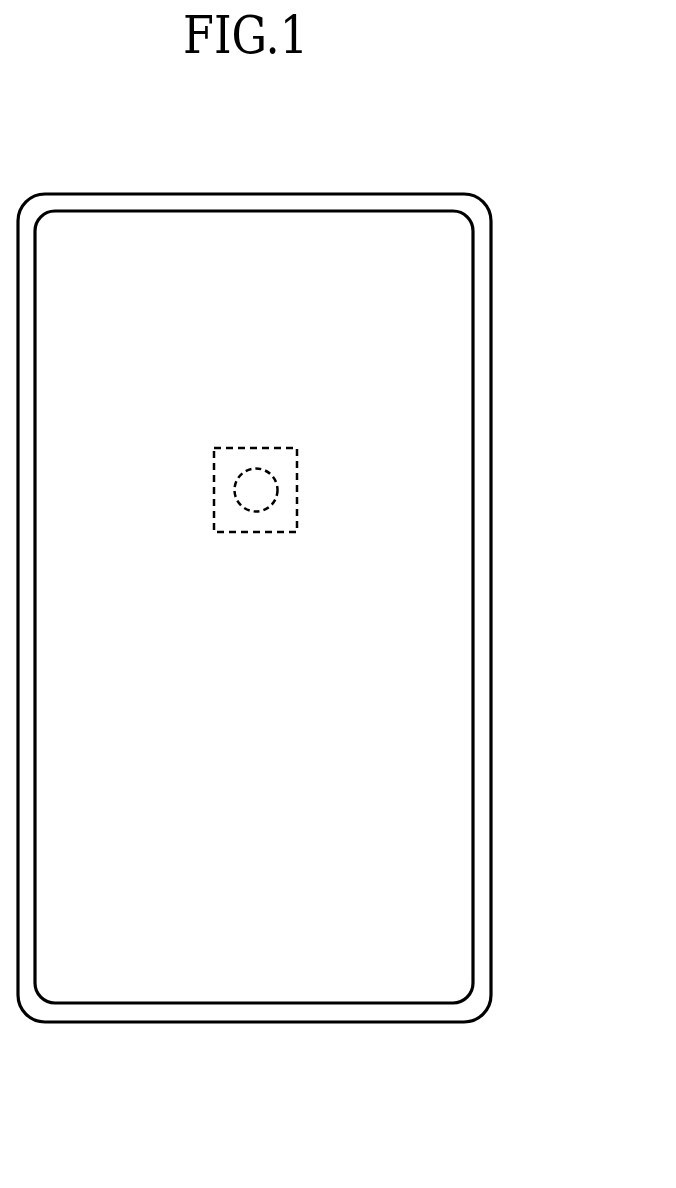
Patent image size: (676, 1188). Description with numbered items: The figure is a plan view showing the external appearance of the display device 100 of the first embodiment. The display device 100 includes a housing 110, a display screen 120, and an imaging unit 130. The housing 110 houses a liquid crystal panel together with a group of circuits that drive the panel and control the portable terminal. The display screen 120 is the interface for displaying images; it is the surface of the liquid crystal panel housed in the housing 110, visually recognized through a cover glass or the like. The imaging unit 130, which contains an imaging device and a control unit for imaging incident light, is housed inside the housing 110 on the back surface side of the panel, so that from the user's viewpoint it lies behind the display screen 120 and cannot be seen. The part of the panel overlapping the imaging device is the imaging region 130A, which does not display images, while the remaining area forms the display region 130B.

The display device 100 is at (441, 137).
The housing 110 is at (222, 204).
The display screen 120 is at (476, 389).
The imaging unit 130 is at (289, 467).
The imaging region 130A is at (236, 488).
The display region 130B is at (458, 778).